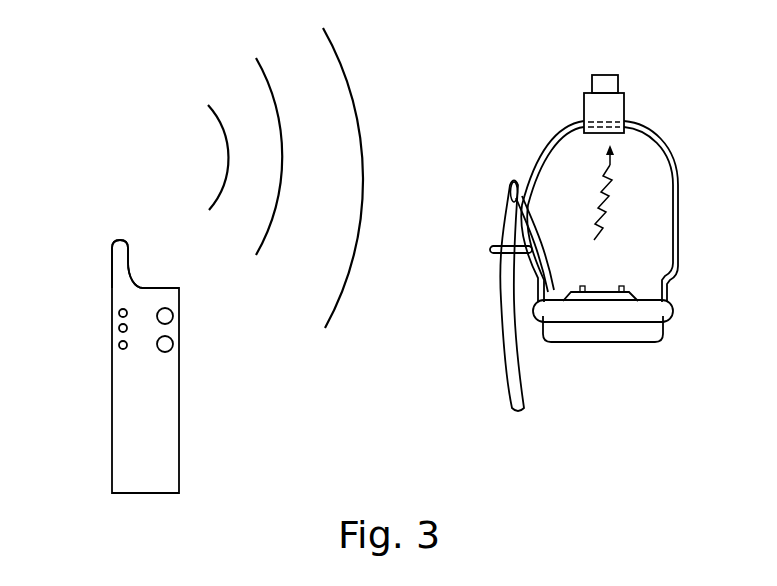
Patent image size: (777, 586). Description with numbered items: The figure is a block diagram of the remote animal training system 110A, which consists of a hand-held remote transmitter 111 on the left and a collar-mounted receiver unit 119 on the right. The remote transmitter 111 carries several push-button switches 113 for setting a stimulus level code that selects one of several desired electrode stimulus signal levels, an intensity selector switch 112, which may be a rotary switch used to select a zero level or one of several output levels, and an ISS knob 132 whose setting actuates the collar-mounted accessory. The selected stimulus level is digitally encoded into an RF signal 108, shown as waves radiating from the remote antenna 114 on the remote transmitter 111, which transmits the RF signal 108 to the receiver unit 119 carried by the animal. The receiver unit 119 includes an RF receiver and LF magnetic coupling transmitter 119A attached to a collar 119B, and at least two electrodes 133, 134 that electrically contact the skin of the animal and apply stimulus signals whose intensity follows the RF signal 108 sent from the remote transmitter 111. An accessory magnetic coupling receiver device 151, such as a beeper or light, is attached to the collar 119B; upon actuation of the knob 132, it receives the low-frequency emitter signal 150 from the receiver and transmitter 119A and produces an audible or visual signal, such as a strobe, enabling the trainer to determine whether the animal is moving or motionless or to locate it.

The RF signal 108 is at (357, 124).
The remote animal training system 110A is at (232, 448).
The remote transmitter 111 is at (112, 468).
The intensity selector switch 112 is at (173, 316).
The push-button switches 113 is at (118, 345).
The remote antenna 114 is at (112, 258).
The ISS knob 132 is at (173, 344).
The receiver unit 119 is at (616, 246).
The RF receiver and LF magnetic coupling transmitter 119A is at (628, 331).
The collar 119B is at (678, 235).
The electrode 133 is at (582, 286).
The electrode 134 is at (622, 286).
The emitter signal 150 is at (612, 168).
The accessory magnetic coupling receiver device 151 is at (624, 102).